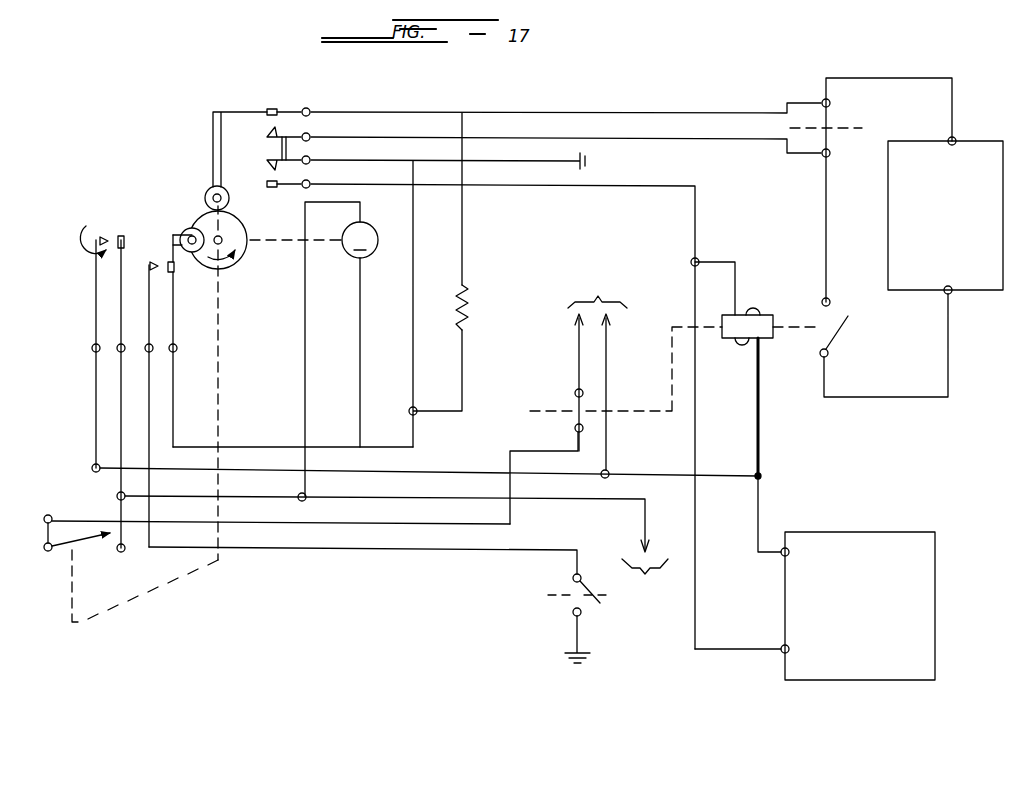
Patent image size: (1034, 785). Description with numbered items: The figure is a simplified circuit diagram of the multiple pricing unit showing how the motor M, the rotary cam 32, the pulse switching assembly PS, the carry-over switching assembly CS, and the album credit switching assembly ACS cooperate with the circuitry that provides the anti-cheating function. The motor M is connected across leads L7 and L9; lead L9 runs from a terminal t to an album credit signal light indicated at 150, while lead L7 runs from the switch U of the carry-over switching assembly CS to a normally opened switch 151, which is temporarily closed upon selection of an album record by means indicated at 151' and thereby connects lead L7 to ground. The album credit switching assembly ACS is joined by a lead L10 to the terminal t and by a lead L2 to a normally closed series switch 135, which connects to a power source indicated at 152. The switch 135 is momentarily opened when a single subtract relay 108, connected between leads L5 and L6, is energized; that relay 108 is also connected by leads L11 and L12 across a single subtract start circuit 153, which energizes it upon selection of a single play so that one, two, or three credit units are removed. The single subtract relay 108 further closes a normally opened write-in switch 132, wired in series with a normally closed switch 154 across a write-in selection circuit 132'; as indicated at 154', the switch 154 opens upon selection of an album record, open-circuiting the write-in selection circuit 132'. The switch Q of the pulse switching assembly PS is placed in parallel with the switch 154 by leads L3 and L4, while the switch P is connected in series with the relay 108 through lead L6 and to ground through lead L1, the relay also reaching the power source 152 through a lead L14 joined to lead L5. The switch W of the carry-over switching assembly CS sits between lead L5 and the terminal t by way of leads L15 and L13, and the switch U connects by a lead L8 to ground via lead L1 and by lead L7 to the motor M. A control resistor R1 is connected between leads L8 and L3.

The rotary cam 32 is at (238, 230).
The single subtract relay 108 is at (740, 302).
The write-in switch 132 is at (860, 345).
The write-in selection circuit 132' is at (945, 229).
The normally closed series switch 135 is at (576, 407).
The album credit signal light 150 is at (645, 580).
The normally opened switch 151 is at (591, 612).
The album record selection means 151' is at (557, 608).
The power source 152 is at (611, 282).
The single subtract start circuit 153 is at (888, 682).
The normally closed switch 154 is at (871, 190).
The album selection opening means 154' is at (850, 225).
The lead L1 is at (502, 162).
The lead L2 is at (516, 452).
The lead L3 is at (505, 112).
The lead L4 is at (438, 139).
The lead L5 is at (478, 474).
The lead L6 is at (371, 187).
The lead L7 is at (320, 551).
The lead L8 is at (241, 447).
The lead L9 is at (418, 502).
The lead L10 is at (118, 521).
The lead L11 is at (759, 505).
The lead L12 is at (700, 656).
The lead L13 is at (118, 479).
The lead L14 is at (607, 342).
The lead L15 is at (94, 452).
The control resistor R1 is at (470, 308).
The motor M is at (341, 349).
The switch P is at (279, 172).
The switch Q is at (279, 121).
The pulse switching assembly PS is at (209, 150).
The switch W is at (87, 234).
The carry-over switching assembly CS is at (110, 226).
The switch U is at (157, 258).
The terminal t is at (126, 514).
The album credit switching assembly ACS is at (70, 550).